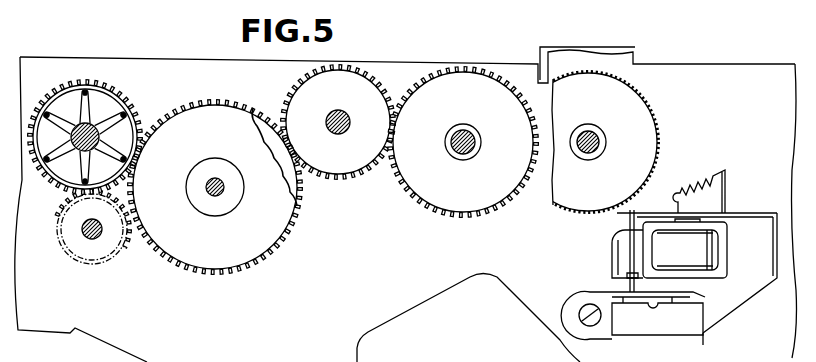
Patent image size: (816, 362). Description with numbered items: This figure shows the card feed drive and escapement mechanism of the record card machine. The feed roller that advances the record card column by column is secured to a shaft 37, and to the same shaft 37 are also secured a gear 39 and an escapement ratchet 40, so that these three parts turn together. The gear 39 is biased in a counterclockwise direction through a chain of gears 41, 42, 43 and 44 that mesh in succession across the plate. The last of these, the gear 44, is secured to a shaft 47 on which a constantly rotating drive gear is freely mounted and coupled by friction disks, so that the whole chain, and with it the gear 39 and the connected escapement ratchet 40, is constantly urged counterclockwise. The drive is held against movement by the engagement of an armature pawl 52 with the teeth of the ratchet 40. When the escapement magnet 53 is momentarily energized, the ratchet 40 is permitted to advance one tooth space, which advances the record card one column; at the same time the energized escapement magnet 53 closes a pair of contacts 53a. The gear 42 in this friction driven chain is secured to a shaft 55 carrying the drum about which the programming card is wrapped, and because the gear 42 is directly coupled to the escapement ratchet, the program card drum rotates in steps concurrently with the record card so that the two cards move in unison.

The shaft 37 is at (598, 148).
The gear 39 is at (547, 172).
The escapement ratchet 40 is at (606, 142).
The gear 41 is at (461, 209).
The gear 42 is at (338, 134).
The gear 43 is at (297, 204).
The gear 44 is at (93, 136).
The shaft 47 is at (100, 142).
The armature pawl 52 is at (639, 214).
The escapement magnet 53 is at (703, 258).
The contacts 53a is at (616, 290).
The shaft 55 is at (349, 126).